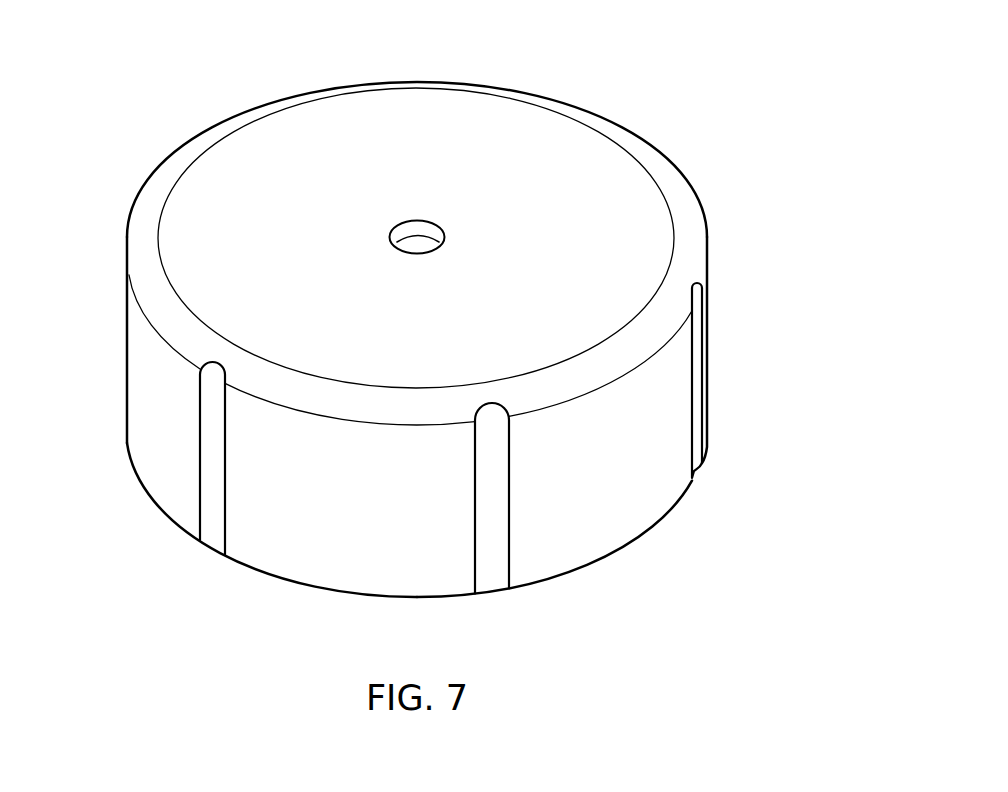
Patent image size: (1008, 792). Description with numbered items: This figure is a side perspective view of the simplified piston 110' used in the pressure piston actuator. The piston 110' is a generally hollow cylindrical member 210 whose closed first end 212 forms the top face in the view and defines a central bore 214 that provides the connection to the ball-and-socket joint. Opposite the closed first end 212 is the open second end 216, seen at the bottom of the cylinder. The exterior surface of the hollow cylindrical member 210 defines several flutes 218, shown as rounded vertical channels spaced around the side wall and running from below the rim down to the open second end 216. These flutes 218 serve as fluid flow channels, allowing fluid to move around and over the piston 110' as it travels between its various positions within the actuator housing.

The piston 110' is at (414, 328).
The hollow cylindrical member 210 is at (130, 373).
The closed first end 212 is at (132, 238).
The bore 214 is at (418, 226).
The open second end 216 is at (622, 550).
The flutes 218 is at (697, 388).